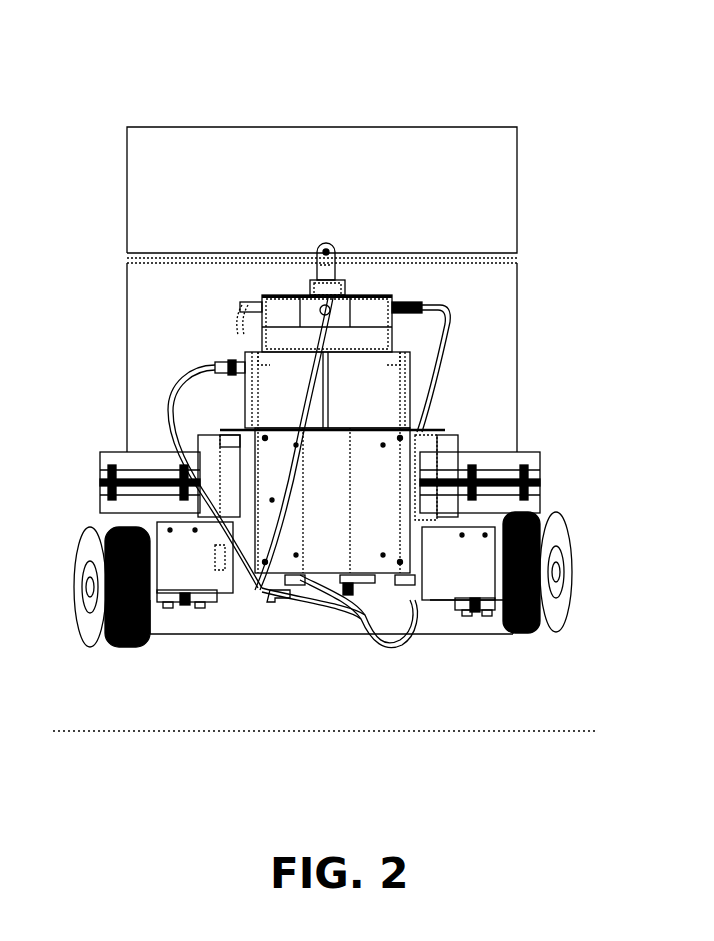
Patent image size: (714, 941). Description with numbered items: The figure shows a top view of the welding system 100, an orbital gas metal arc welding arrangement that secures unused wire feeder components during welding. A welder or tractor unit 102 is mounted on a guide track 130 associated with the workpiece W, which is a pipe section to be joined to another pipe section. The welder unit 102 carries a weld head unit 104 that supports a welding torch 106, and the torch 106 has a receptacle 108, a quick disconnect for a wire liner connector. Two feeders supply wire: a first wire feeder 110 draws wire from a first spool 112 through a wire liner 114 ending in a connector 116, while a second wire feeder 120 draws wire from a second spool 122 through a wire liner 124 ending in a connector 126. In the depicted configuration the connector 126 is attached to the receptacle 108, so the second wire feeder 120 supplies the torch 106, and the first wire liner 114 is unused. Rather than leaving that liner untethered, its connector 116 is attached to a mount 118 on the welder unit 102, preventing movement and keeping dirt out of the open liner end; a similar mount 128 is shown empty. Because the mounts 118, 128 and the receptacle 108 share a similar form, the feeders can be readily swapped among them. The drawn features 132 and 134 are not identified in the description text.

The welding system 100 is at (553, 45).
The workpiece W is at (127, 197).
The welder unit 102 is at (348, 518).
The weld head unit 104 is at (277, 311).
The welding torch 106 is at (306, 239).
The receptacle 108 is at (326, 243).
The first wire feeder 110 is at (465, 636).
The first spool 112 is at (557, 625).
The wire liner 114 is at (433, 636).
The connector 116 is at (183, 370).
The mount 118 is at (245, 362).
The second wire feeder 120 is at (198, 575).
The second spool 122 is at (95, 641).
The wire liner 124 is at (220, 601).
The connector 126 is at (336, 254).
The mount 128 is at (420, 366).
The guide track 130 is at (100, 465).
The left column side 132 is at (245, 416).
The right column side 134 is at (411, 396).